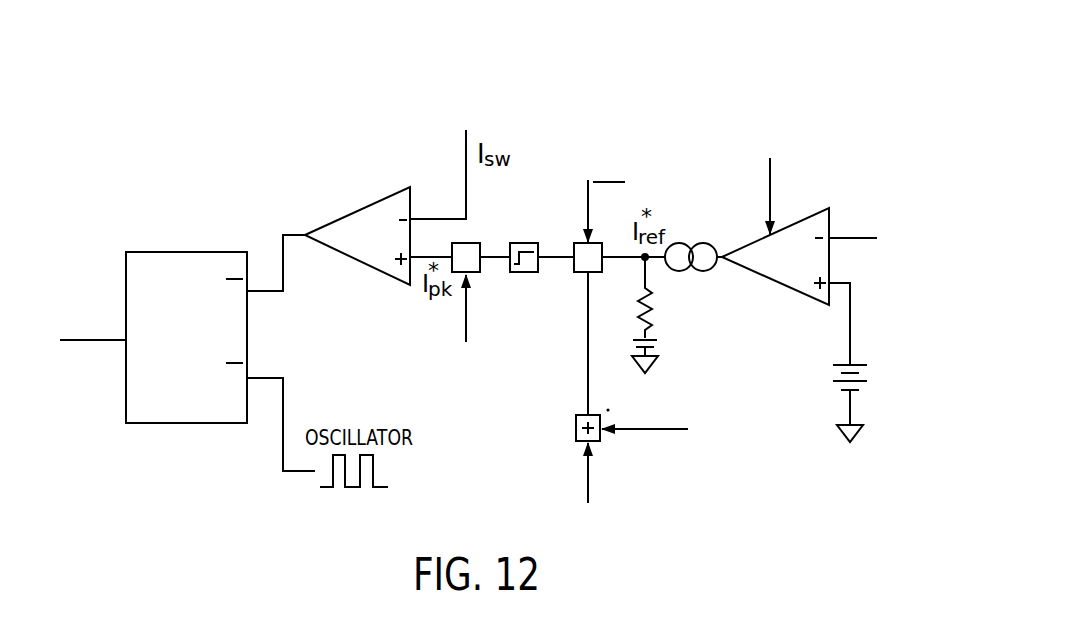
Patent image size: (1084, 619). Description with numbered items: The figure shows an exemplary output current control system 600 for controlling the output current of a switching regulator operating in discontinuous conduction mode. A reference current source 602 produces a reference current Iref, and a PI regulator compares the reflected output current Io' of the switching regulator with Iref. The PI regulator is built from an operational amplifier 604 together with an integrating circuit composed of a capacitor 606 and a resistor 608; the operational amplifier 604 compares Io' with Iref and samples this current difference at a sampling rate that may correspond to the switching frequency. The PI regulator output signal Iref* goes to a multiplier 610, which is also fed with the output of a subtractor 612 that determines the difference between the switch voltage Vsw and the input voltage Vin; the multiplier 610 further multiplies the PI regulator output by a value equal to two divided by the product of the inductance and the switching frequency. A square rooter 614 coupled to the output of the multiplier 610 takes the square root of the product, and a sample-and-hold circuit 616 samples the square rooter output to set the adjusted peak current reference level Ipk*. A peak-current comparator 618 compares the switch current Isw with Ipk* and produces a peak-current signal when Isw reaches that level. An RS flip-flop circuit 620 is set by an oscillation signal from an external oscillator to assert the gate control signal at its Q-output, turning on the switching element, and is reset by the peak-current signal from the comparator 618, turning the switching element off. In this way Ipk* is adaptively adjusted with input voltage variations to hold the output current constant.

The output current control system 600 is at (672, 91).
The reference current source 602 is at (873, 371).
The operational amplifier 604 is at (772, 282).
The capacitor 606 is at (658, 341).
The resistor 608 is at (657, 301).
The multiplier 610 is at (590, 272).
The subtractor 612 is at (577, 432).
The square rooter 614 is at (523, 243).
The sample-and-hold circuit 616 is at (468, 243).
The peak-current comparator 618 is at (340, 252).
The RS flip-flop circuit 620 is at (188, 252).